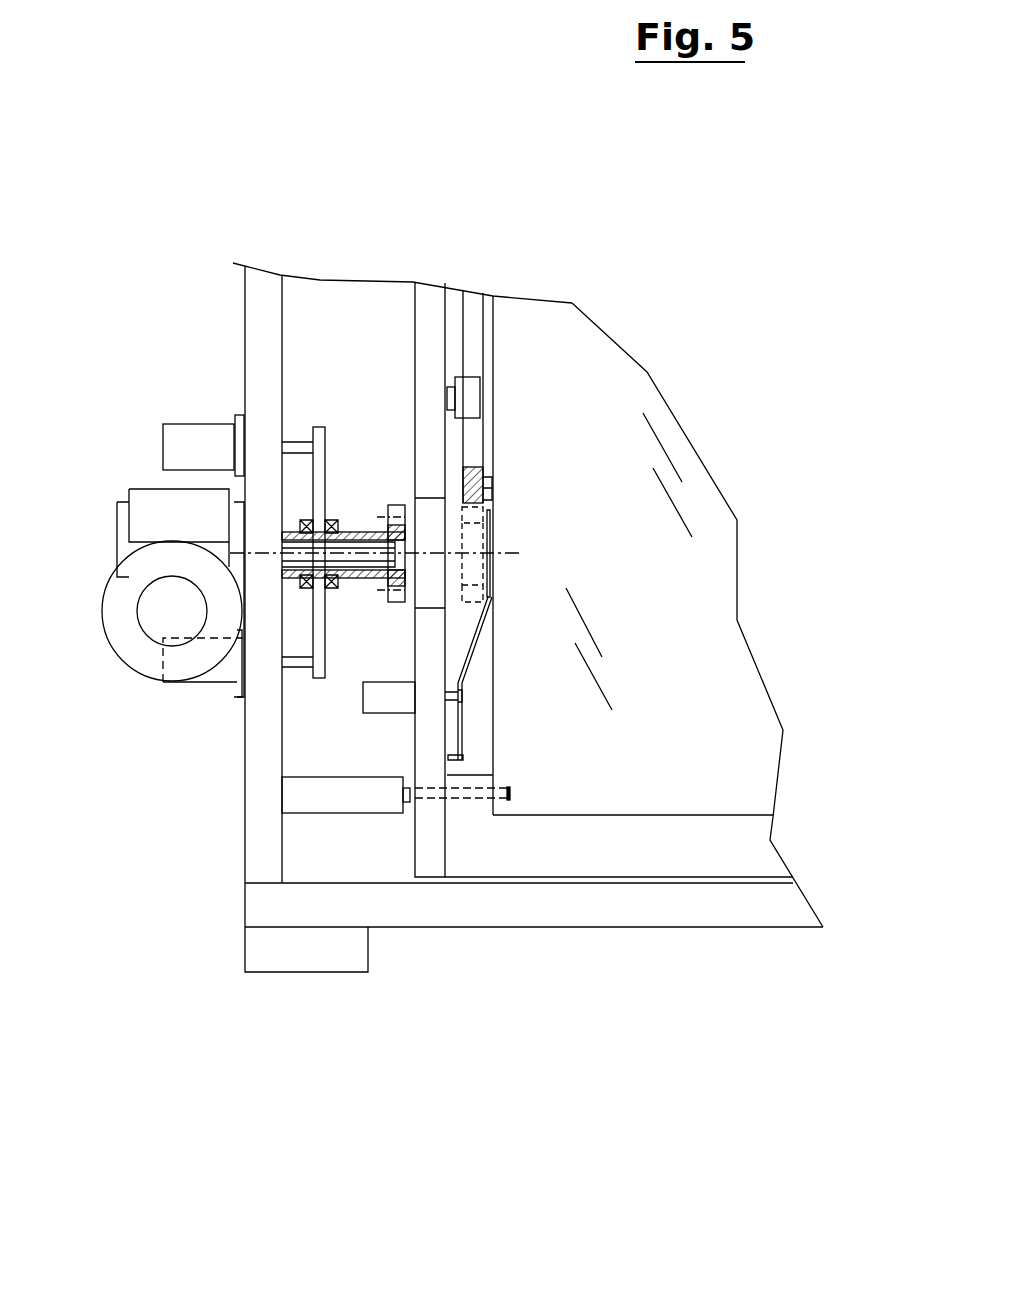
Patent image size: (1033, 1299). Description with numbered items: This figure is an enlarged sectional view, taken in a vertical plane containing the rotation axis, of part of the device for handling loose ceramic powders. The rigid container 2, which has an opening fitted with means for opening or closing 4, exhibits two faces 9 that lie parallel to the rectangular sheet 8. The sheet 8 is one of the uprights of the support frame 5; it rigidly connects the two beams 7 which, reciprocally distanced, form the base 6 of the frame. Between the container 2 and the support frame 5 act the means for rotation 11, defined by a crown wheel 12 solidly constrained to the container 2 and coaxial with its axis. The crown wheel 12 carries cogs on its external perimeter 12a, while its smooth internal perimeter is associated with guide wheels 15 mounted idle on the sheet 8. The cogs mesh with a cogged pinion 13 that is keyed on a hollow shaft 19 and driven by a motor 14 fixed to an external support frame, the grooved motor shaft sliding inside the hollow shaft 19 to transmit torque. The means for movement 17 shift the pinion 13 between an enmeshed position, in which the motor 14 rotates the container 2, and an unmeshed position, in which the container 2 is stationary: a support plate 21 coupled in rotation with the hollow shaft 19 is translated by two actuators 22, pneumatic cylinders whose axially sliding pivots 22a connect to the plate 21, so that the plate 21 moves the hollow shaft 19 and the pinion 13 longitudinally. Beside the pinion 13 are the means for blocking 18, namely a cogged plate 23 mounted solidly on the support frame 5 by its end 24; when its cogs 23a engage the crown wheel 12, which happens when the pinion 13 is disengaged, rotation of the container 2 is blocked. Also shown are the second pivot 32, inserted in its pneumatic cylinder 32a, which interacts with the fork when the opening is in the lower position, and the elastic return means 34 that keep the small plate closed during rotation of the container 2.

The container 2 is at (740, 830).
The means for opening or closing 4 is at (300, 838).
The support frame 5 is at (518, 935).
The base 6 is at (617, 935).
The beams 7 is at (673, 850).
The rectangular sheet 8 is at (425, 377).
The faces 9 is at (490, 817).
The means for rotation 11 is at (455, 352).
The crown wheel 12 is at (500, 356).
The external perimeter 12a is at (485, 468).
The cogged pinion 13 is at (400, 500).
The motor 14 is at (137, 527).
The guide wheels 15 is at (480, 395).
The means for movement 17 is at (362, 600).
The means for blocking 18 is at (500, 532).
The hollow shaft 19 is at (320, 427).
The support plate 21 is at (313, 432).
The actuators 22 is at (192, 433).
The axially sliding pivots 22a is at (297, 447).
The cogged plate 23 is at (493, 555).
The cogs 23a is at (485, 518).
The end 24 is at (460, 737).
The second pivot 32 is at (410, 800).
The pneumatic cylinder 32a is at (350, 807).
The elastic return means 34 is at (405, 757).